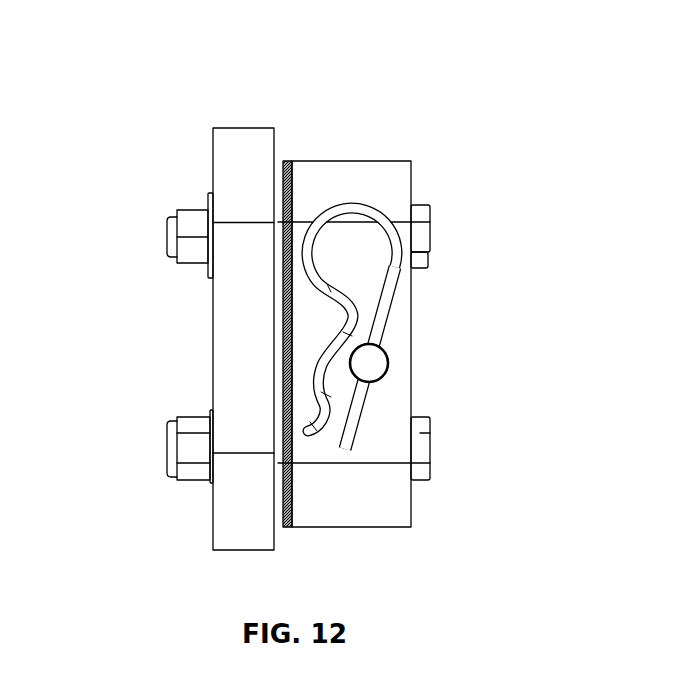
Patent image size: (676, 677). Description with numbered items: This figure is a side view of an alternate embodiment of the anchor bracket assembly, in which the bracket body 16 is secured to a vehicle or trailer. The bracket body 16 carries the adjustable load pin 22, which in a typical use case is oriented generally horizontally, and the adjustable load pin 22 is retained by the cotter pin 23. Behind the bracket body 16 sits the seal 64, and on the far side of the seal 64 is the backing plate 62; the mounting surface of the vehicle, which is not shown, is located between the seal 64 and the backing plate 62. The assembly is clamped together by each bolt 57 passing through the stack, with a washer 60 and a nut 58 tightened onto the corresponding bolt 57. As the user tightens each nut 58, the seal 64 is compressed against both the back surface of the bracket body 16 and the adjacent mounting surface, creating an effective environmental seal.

The bracket body 16 is at (400, 175).
The adjustable load pin 22 is at (375, 360).
The cotter pin 23 is at (382, 287).
The bolt 57 is at (418, 230).
The nut 58 is at (170, 220).
The washer 60 is at (208, 485).
The backing plate 62 is at (222, 140).
The seal 64 is at (287, 161).